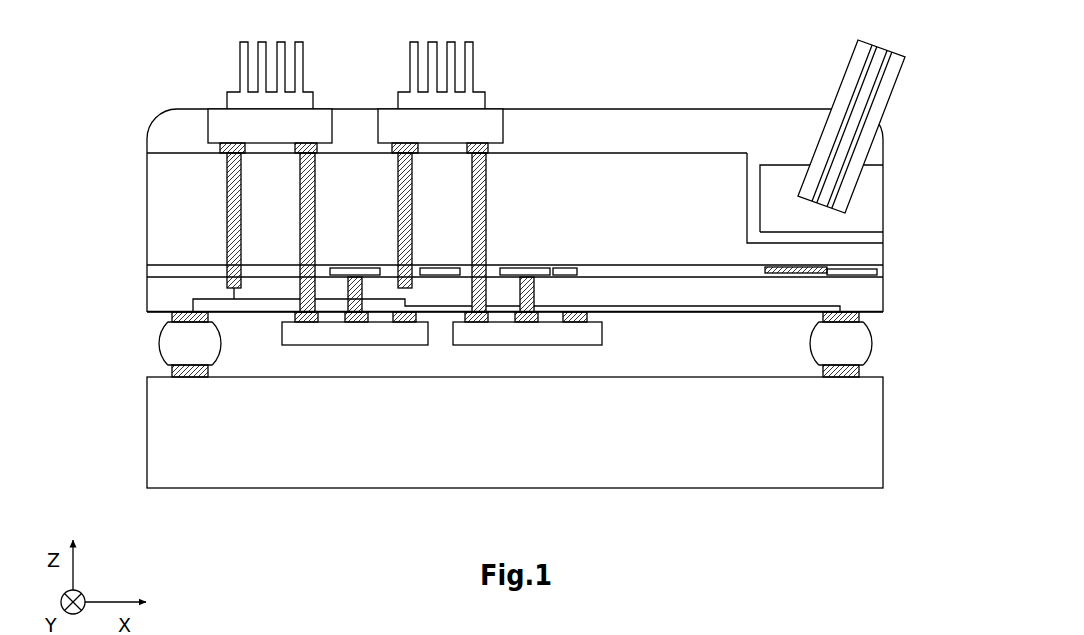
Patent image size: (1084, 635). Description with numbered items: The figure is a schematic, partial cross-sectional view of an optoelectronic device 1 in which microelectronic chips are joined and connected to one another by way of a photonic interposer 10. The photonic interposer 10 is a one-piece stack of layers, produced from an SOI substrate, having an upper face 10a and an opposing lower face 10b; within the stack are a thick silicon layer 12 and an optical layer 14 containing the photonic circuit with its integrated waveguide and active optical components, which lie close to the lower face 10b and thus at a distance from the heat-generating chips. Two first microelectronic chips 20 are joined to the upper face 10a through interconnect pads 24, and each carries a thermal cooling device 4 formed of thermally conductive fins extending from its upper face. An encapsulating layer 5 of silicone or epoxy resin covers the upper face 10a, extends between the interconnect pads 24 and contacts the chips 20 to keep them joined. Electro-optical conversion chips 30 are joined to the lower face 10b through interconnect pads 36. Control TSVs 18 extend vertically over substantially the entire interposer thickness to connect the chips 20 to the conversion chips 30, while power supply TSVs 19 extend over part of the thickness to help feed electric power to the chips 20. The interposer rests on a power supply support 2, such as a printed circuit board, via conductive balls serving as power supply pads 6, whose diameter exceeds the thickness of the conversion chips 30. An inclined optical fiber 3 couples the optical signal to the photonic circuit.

The optoelectronic device 1 is at (108, 50).
The power supply support 2 is at (883, 445).
The optical fiber 3 is at (908, 55).
The thermal cooling device 4 is at (303, 48).
The encapsulating layer 5 is at (145, 132).
The power supply pads 6 is at (158, 343).
The photonic interposer 10 is at (110, 188).
The upper face 10a is at (698, 152).
The lower face 10b is at (710, 313).
The thick silicon layer 12 is at (145, 228).
The optical layer 14 is at (145, 272).
The control TSV 18 is at (315, 210).
The power supply TSV 19 is at (227, 237).
The first microelectronic chip 20 is at (205, 127).
The interconnect pads 24 is at (493, 147).
The electro-optical conversion chip 30 is at (355, 345).
The interconnect pads 36 is at (590, 315).